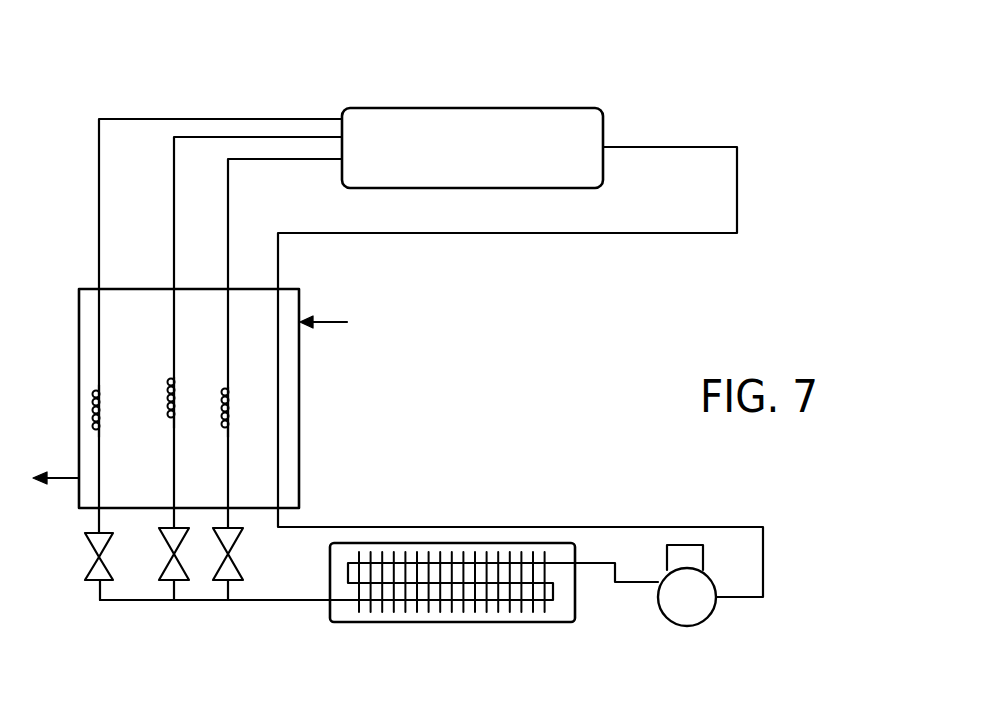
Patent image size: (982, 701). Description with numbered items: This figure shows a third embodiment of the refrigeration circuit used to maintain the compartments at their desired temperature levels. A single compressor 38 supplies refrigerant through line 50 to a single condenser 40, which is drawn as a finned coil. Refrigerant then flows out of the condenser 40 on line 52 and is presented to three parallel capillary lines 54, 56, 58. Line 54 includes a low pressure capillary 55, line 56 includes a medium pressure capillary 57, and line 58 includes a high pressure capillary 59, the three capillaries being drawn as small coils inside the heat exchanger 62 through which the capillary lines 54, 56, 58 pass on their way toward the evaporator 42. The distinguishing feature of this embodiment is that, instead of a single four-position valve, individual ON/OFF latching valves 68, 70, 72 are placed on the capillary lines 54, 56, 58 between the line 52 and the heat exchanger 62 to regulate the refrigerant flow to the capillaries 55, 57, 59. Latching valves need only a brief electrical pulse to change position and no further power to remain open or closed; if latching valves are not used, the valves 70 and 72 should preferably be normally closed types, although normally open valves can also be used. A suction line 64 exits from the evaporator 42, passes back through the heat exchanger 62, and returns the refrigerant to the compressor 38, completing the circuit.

The compressor 38 is at (705, 620).
The condenser 40 is at (456, 624).
The evaporator 42 is at (530, 107).
The line 50 is at (630, 584).
The line 52 is at (305, 603).
The capillary line 54 is at (232, 520).
The low pressure capillary 55 is at (232, 393).
The capillary line 56 is at (170, 515).
The medium pressure capillary 57 is at (178, 412).
The capillary line 58 is at (92, 520).
The high pressure capillary 59 is at (103, 400).
The heat exchanger 62 is at (79, 361).
The suction line 64 is at (568, 234).
The ON/OFF latching valve 68 is at (232, 560).
The ON/OFF latching valve 70 is at (166, 560).
The ON/OFF latching valve 72 is at (90, 571).